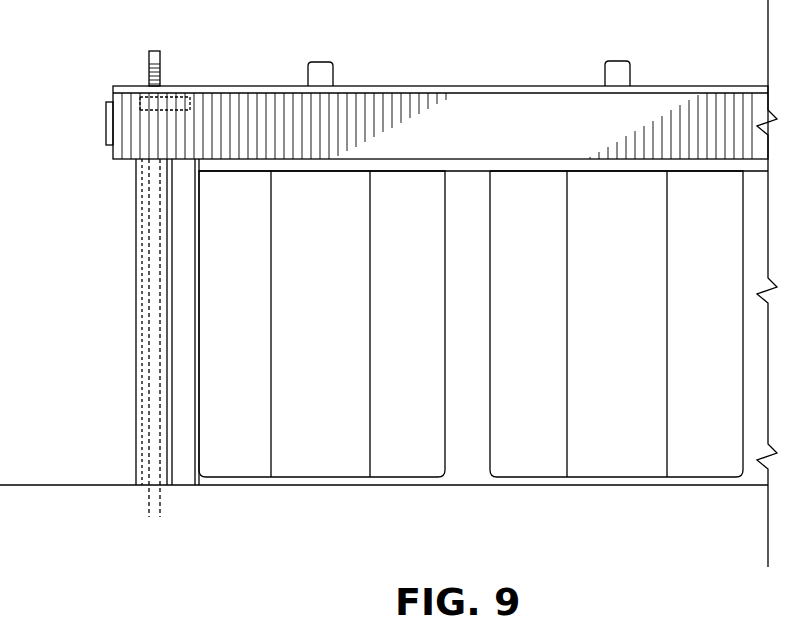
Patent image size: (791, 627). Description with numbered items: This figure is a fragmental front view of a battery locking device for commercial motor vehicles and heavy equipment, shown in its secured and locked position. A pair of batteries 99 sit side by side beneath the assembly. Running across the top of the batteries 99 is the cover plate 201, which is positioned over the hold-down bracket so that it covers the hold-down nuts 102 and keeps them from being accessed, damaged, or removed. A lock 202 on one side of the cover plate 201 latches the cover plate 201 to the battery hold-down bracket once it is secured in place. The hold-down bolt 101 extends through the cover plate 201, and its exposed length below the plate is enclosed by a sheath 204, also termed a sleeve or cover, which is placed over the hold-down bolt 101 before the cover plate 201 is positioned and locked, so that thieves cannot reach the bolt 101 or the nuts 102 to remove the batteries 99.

The battery 99 is at (293, 462).
The hold-down bolt 101 is at (149, 72).
The hold-down nut 102 is at (194, 90).
The cover plate 201 is at (490, 105).
The lock 202 is at (106, 130).
The sheath 204 is at (137, 326).